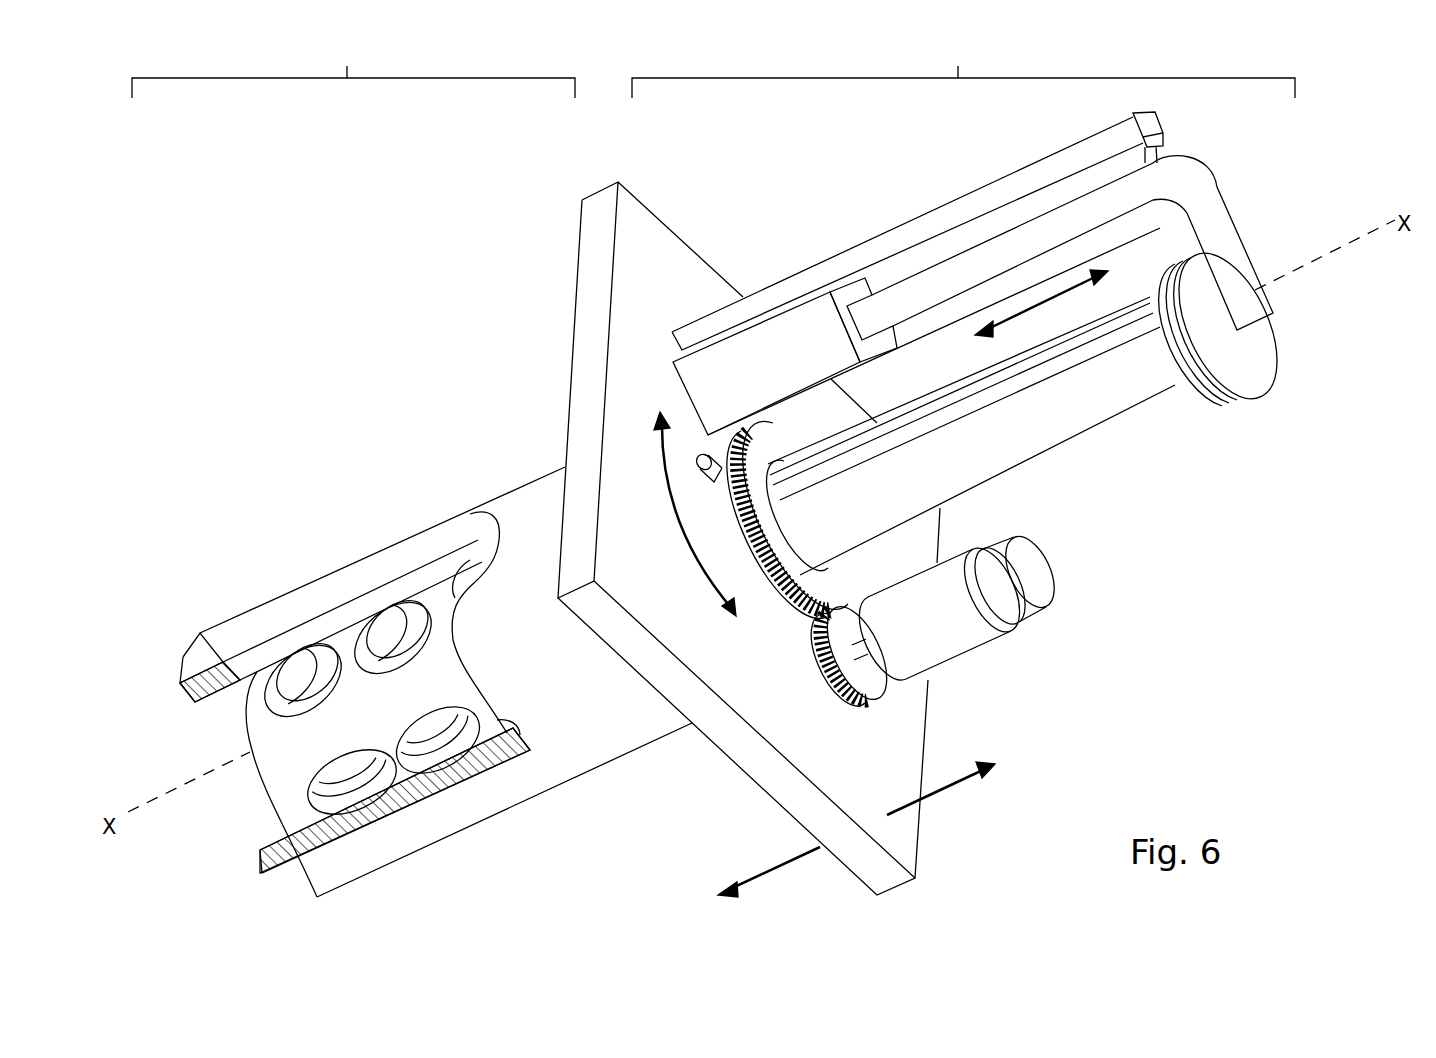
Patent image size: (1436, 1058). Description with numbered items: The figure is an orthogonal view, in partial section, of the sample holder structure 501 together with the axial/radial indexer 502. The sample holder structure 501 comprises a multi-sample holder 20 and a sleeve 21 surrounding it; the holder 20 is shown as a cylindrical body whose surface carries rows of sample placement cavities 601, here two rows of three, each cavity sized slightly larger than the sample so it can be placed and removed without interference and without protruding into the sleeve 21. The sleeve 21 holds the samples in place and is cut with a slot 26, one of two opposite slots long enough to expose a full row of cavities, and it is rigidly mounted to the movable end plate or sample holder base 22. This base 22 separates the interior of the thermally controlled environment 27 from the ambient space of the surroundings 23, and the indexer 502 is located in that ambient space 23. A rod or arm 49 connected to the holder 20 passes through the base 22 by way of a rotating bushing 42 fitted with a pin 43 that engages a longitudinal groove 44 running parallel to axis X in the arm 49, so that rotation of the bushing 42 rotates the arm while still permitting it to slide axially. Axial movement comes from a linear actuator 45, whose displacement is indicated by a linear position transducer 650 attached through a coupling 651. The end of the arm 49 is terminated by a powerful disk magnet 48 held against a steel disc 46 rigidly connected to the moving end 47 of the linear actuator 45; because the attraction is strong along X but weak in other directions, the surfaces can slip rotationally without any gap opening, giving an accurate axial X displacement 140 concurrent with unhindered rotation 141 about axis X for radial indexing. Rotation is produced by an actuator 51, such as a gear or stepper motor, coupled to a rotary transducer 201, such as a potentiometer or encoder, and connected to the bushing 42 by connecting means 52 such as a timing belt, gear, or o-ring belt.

The sample holder structure 501 is at (353, 69).
The axial/radial indexer 502 is at (963, 69).
The multi-sample holder 20 is at (288, 773).
The sleeve 21 is at (288, 872).
The movable end plate/sample holder base 22 is at (655, 240).
The ambient space of the surroundings 23 is at (956, 780).
The slot 26 is at (470, 527).
The thermally controlled environment 27 is at (753, 882).
The rotating bushing 42 is at (788, 590).
The pin 43 is at (707, 457).
The longitudinal groove 44 is at (1010, 385).
The linear actuator 45 is at (732, 353).
The steel disc 46 is at (1252, 368).
The moving end of the linear actuator 47 is at (972, 270).
The disk magnet 48 is at (1213, 390).
The rod or arm (extension) 49 is at (1028, 442).
The rotary actuator 51 is at (967, 638).
The connecting means 52 is at (827, 690).
The axial X displacement 140 is at (1037, 307).
The rotation around axis X 141 is at (692, 535).
The rotary transducer 201 is at (1052, 605).
The sample placement cavity 601 is at (302, 660).
The linear position transducer 650 is at (858, 256).
The coupling 651 is at (1163, 141).